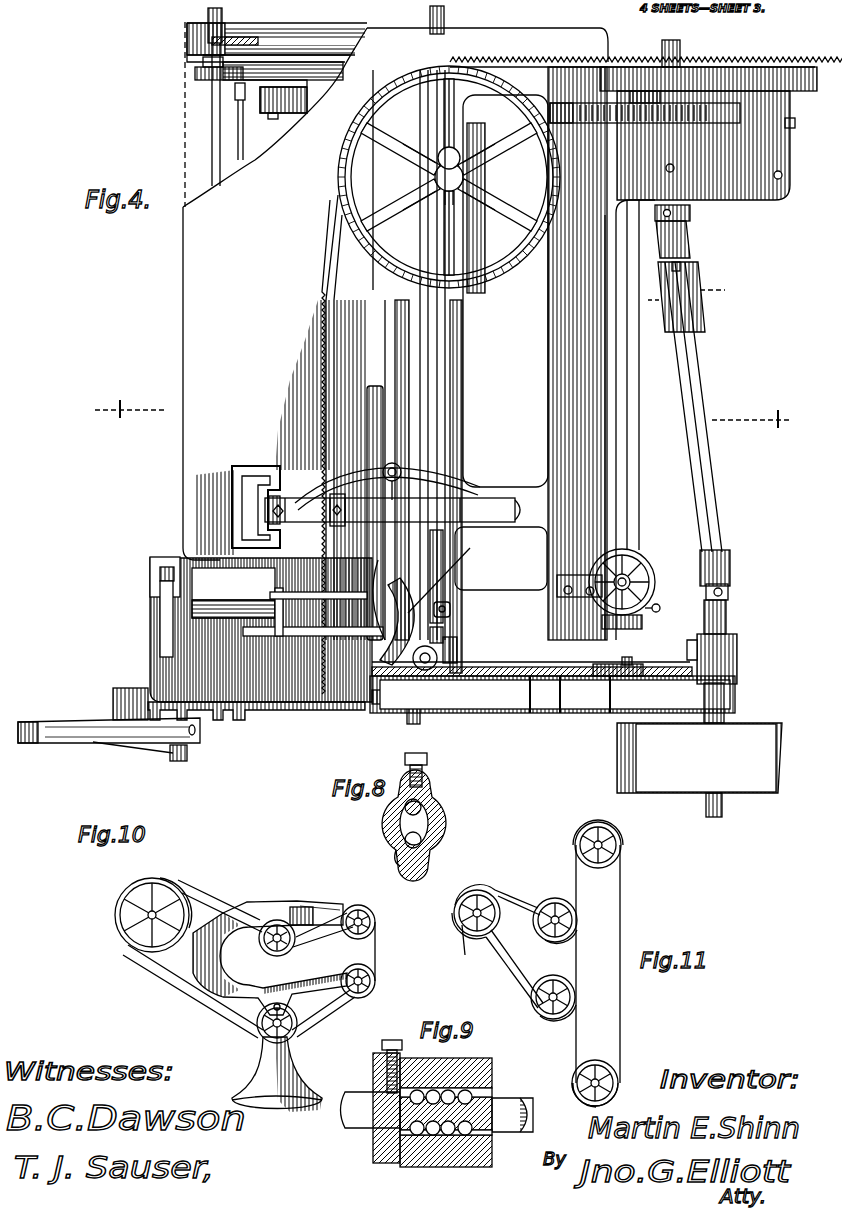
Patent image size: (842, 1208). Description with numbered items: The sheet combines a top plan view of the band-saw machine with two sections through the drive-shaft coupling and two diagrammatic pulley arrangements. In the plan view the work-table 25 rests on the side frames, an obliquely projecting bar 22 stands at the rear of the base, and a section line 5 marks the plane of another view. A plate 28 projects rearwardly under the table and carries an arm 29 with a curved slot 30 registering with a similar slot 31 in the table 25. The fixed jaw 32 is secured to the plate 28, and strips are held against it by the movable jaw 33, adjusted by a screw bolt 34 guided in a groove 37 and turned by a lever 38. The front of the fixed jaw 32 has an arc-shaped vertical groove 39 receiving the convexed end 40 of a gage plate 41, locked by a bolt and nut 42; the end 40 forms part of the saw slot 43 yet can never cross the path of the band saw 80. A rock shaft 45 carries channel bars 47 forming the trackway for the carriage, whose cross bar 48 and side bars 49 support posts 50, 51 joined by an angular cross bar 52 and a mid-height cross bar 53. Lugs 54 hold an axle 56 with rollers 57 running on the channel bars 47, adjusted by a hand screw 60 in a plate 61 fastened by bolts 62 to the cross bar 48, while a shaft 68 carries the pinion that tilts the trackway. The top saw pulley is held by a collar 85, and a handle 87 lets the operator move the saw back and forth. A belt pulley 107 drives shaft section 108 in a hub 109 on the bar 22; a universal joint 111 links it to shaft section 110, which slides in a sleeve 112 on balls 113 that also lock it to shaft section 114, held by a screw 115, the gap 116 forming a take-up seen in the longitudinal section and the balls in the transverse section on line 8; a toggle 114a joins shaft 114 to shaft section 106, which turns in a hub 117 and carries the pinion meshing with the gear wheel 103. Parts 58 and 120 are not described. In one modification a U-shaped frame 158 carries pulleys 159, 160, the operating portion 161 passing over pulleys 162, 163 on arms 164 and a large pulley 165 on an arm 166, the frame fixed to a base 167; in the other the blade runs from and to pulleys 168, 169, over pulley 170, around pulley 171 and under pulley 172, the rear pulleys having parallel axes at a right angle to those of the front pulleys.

In FIG. 4, the section line 5- 5 is at (442, 417).
In FIG. 4, the section line 8 is at (685, 295).
In FIG. 4, the obliquely projecting bar 22 is at (735, 697).
In FIG. 4, the work-table 25 is at (395, 291).
In FIG. 4, the plate 28 is at (388, 585).
In FIG. 4, the arm 29 is at (396, 462).
In FIG. 4, the slot 30 is at (452, 445).
In FIG. 4, the slot 31 is at (282, 500).
In FIG. 4, the fixed jaw 32 is at (448, 600).
In FIG. 4, the movable jaw 33 is at (261, 630).
In FIG. 4, the screw bolt 34 is at (178, 560).
In FIG. 4, the groove 37 is at (283, 632).
In FIG. 4, the lever 38 is at (160, 636).
In FIG. 4, the vertical groove 39 is at (460, 558).
In FIG. 4, the convexed end 40 is at (410, 712).
In FIG. 4, the gage plate 41 is at (402, 400).
In FIG. 4, the bolt and nut 42 is at (375, 395).
In FIG. 4, the slot 43 is at (320, 640).
In FIG. 4, the rock shaft 45 is at (188, 750).
In FIG. 4, the channel bars 47 is at (520, 675).
In FIG. 4, the cross bar 48 is at (432, 672).
In FIG. 4, the side bars 49 is at (501, 560).
In FIG. 4, the post 50 is at (500, 186).
In FIG. 4, the post 51 is at (493, 495).
In FIG. 4, the angular cross bar 52 is at (464, 322).
In FIG. 4, the cross bar 53 is at (566, 352).
In FIG. 4, the lugs 54 is at (668, 600).
In FIG. 4, the axle 56 is at (639, 437).
In FIG. 4, the rollers 57 is at (635, 660).
In FIG. 4, the clamp 58 is at (590, 664).
In FIG. 4, the hand screw 60 is at (640, 560).
In FIG. 4, the plate 61 is at (565, 575).
In FIG. 4, the bolts 62 is at (558, 590).
In FIG. 4, the shaft 68 is at (222, 18).
In FIG. 4, the band saw 80 is at (273, 492).
In FIG. 4, the collar 85 is at (340, 493).
In FIG. 4, the handle 87 is at (232, 468).
In FIG. 4, the gear wheel 103 is at (806, 62).
In FIG. 4, the drive shaft section 106 is at (675, 30).
In FIG. 4, the belt pulley 107 is at (699, 758).
In FIG. 4, the shaft section 108 is at (728, 620).
In FIG. 4, the hub 109 is at (737, 666).
In FIG. 4, the shaft section 110 is at (712, 478).
In FIG. 8, the shaft section 110 is at (445, 815).
In FIG. 9, the shaft section 110 is at (510, 1100).
In FIG. 4, the universal joint 111 is at (728, 592).
In FIG. 4, the sleeve 112 is at (705, 318).
In FIG. 8, the sleeve 112 is at (385, 823).
In FIG. 9, the sleeve 112 is at (373, 1145).
In FIG. 4, the balls 113 is at (706, 145).
In FIG. 8, the balls 113 is at (437, 840).
In FIG. 9, the balls 113 is at (492, 1145).
In FIG. 4, the shaft section 114 is at (690, 245).
In FIG. 9, the shaft section 114 is at (362, 1100).
In FIG. 4, the toggle 114a is at (690, 212).
In FIG. 4, the screw 115 is at (682, 267).
In FIG. 8, the screw 115 is at (427, 765).
In FIG. 9, the screw 115 is at (392, 1040).
In FIG. 9, the space 116 is at (390, 1167).
In FIG. 4, the hub 117 is at (672, 125).
In FIG. 11, the pulley 120 is at (480, 888).
In FIG. 10, the U-shaped frame 158 is at (290, 903).
In FIG. 10, the pulley 159 is at (375, 912).
In FIG. 10, the pulley 160 is at (375, 980).
In FIG. 10, the operating portion 161 is at (376, 945).
In FIG. 11, the operating portion 161 is at (624, 890).
In FIG. 10, the upper pulley 162 is at (268, 921).
In FIG. 10, the lower pulley 163 is at (258, 1035).
In FIG. 10, the arms 164 is at (300, 905).
In FIG. 10, the large pulley 165 is at (115, 908).
In FIG. 10, the arm 166 is at (135, 950).
In FIG. 10, the base 167 is at (238, 1085).
In FIG. 11, the pulley 168 is at (624, 848).
In FIG. 11, the pulley 169 is at (602, 1060).
In FIG. 11, the pulley 170 is at (545, 1010).
In FIG. 11, the pulley 171 is at (481, 950).
In FIG. 11, the pulley 172 is at (550, 895).